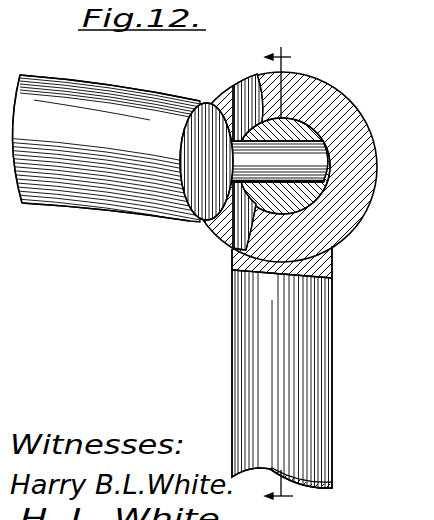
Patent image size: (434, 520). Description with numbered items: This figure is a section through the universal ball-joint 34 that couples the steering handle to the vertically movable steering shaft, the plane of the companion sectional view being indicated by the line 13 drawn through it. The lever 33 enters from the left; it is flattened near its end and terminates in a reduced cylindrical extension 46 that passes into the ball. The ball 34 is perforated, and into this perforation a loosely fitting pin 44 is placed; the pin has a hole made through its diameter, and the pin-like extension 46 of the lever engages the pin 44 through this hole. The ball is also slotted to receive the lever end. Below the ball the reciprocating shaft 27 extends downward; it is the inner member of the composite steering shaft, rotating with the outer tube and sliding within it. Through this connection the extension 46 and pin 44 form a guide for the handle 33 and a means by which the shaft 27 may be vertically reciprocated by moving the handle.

The section line 13 is at (279, 271).
The reciprocating shaft 27 is at (312, 309).
The lever 33 is at (104, 216).
The universal ball-joint 34 is at (318, 90).
The pin 44 is at (322, 127).
The reduced cylindrical extension 46 is at (362, 167).